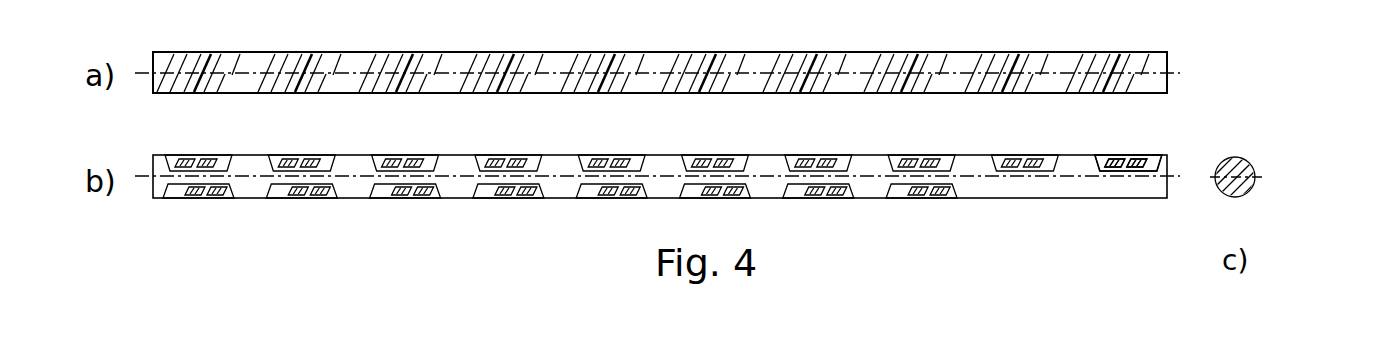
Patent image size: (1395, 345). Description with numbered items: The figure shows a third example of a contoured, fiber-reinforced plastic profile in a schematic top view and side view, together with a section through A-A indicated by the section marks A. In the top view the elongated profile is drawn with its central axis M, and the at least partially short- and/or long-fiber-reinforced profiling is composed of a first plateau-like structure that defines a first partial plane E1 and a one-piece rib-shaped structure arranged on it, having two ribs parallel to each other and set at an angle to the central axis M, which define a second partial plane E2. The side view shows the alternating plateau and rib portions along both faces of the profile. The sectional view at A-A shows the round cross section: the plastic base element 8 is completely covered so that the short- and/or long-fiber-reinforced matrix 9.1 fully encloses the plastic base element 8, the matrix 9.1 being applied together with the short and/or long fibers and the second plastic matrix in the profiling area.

The central axis M is at (1168, 72).
The section A- A is at (295, 140).
The first partial plane E1 is at (734, 156).
The second partial plane E2 is at (722, 156).
The plastic base element 8 is at (1247, 196).
The short- and/or long-fiber-reinforced matrix 9.1 is at (1218, 191).